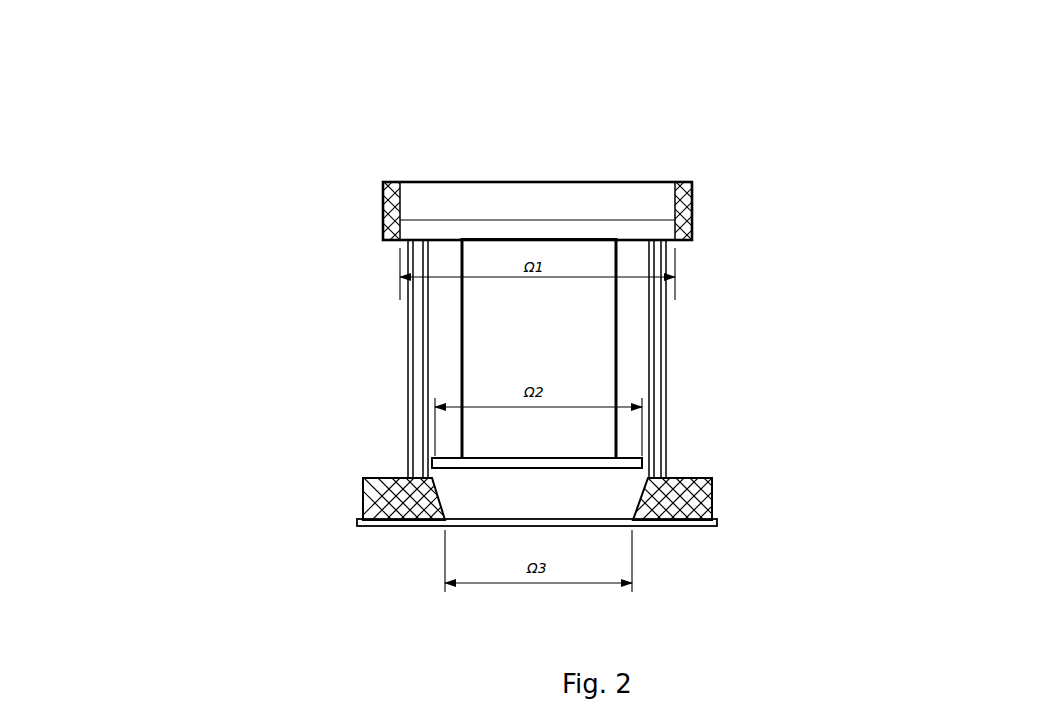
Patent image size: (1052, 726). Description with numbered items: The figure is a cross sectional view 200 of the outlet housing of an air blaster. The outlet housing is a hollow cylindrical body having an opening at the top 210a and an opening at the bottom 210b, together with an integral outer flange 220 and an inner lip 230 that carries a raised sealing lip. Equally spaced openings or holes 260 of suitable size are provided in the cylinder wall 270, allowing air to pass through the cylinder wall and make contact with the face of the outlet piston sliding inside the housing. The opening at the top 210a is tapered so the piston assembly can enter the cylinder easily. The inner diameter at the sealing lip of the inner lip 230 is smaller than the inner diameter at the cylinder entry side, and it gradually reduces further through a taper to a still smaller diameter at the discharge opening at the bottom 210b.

The cross sectional view 200 is at (137, 90).
The opening at the top 210a is at (672, 180).
The opening at the bottom 210b is at (437, 505).
The outer flange 220 is at (725, 515).
The inner lip 230 is at (692, 472).
The openings or holes 260 is at (433, 383).
The cylinder wall 270 is at (382, 213).